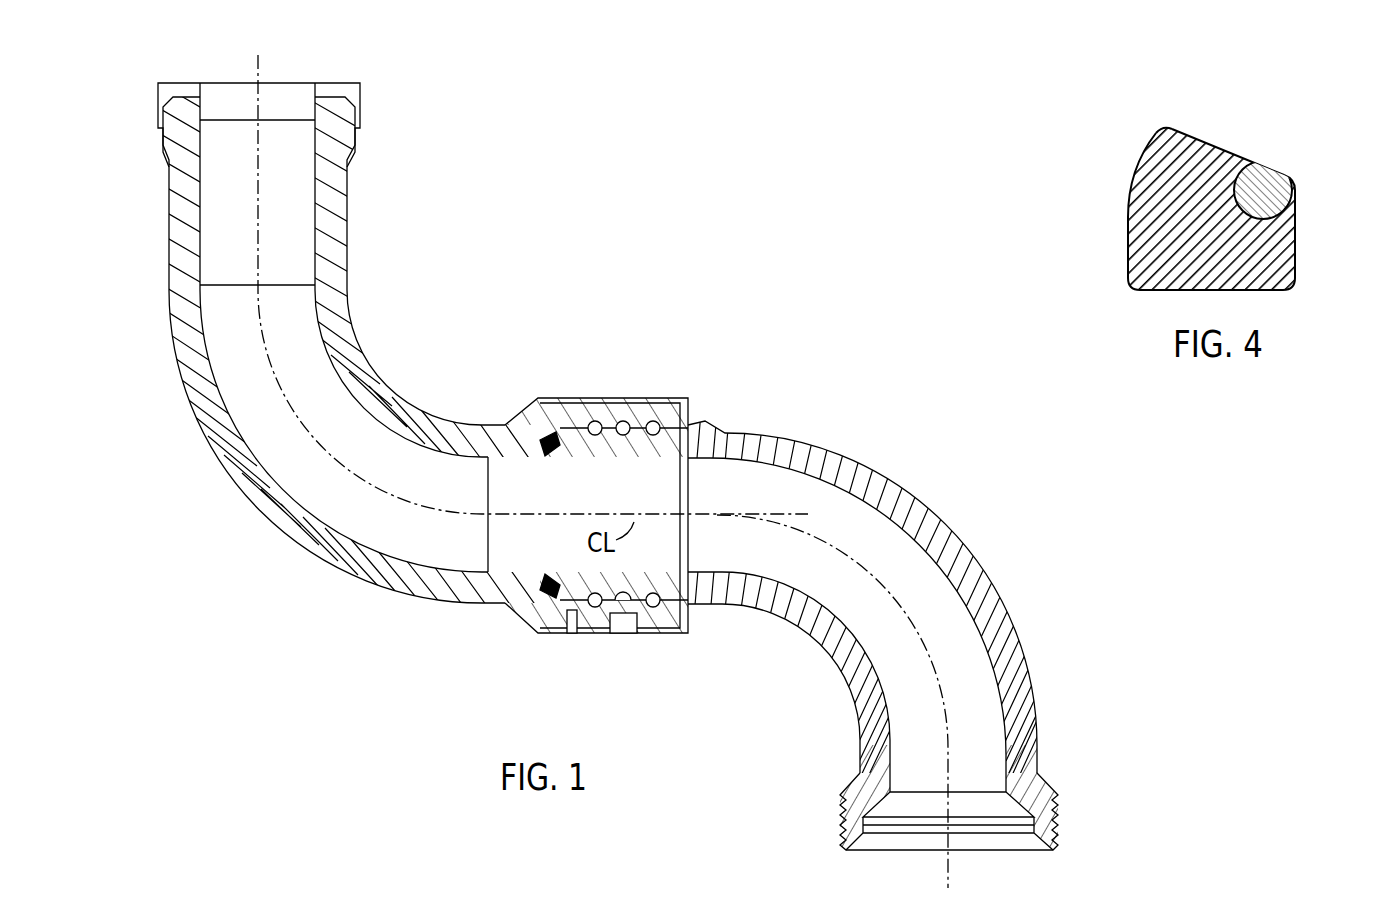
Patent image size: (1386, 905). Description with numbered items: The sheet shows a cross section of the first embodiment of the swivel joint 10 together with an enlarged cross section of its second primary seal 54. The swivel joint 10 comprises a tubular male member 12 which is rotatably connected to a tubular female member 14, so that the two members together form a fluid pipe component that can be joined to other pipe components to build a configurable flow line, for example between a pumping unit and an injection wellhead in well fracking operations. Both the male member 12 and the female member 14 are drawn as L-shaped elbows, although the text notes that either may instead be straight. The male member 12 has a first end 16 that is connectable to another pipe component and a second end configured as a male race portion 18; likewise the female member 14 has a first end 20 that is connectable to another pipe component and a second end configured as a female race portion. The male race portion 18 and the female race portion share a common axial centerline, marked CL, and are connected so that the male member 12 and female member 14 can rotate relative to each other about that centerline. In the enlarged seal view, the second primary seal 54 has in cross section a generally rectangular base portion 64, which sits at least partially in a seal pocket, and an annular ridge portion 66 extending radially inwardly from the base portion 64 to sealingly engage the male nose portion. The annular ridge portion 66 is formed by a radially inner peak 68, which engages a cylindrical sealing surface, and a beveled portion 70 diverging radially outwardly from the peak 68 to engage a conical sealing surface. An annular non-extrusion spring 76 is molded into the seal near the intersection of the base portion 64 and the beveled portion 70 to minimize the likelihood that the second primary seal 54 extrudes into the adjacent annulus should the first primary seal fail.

In FIG. 1, the swivel joint 10 is at (802, 322).
In FIG. 1, the tubular male member 12 is at (955, 523).
In FIG. 1, the tubular female member 14 is at (378, 362).
In FIG. 1, the first end 16 is at (1060, 796).
In FIG. 1, the male race portion 18 is at (612, 470).
In FIG. 1, the first end 20 is at (360, 128).
In FIG. 4, the second primary seal 54 is at (1219, 185).
In FIG. 4, the base portion 64 is at (1127, 253).
In FIG. 4, the annular ridge portion 66 is at (1138, 146).
In FIG. 4, the radially inner peak 68 is at (1163, 126).
In FIG. 4, the beveled portion 70 is at (1207, 138).
In FIG. 4, the annular non-extrusion spring 76 is at (1293, 178).